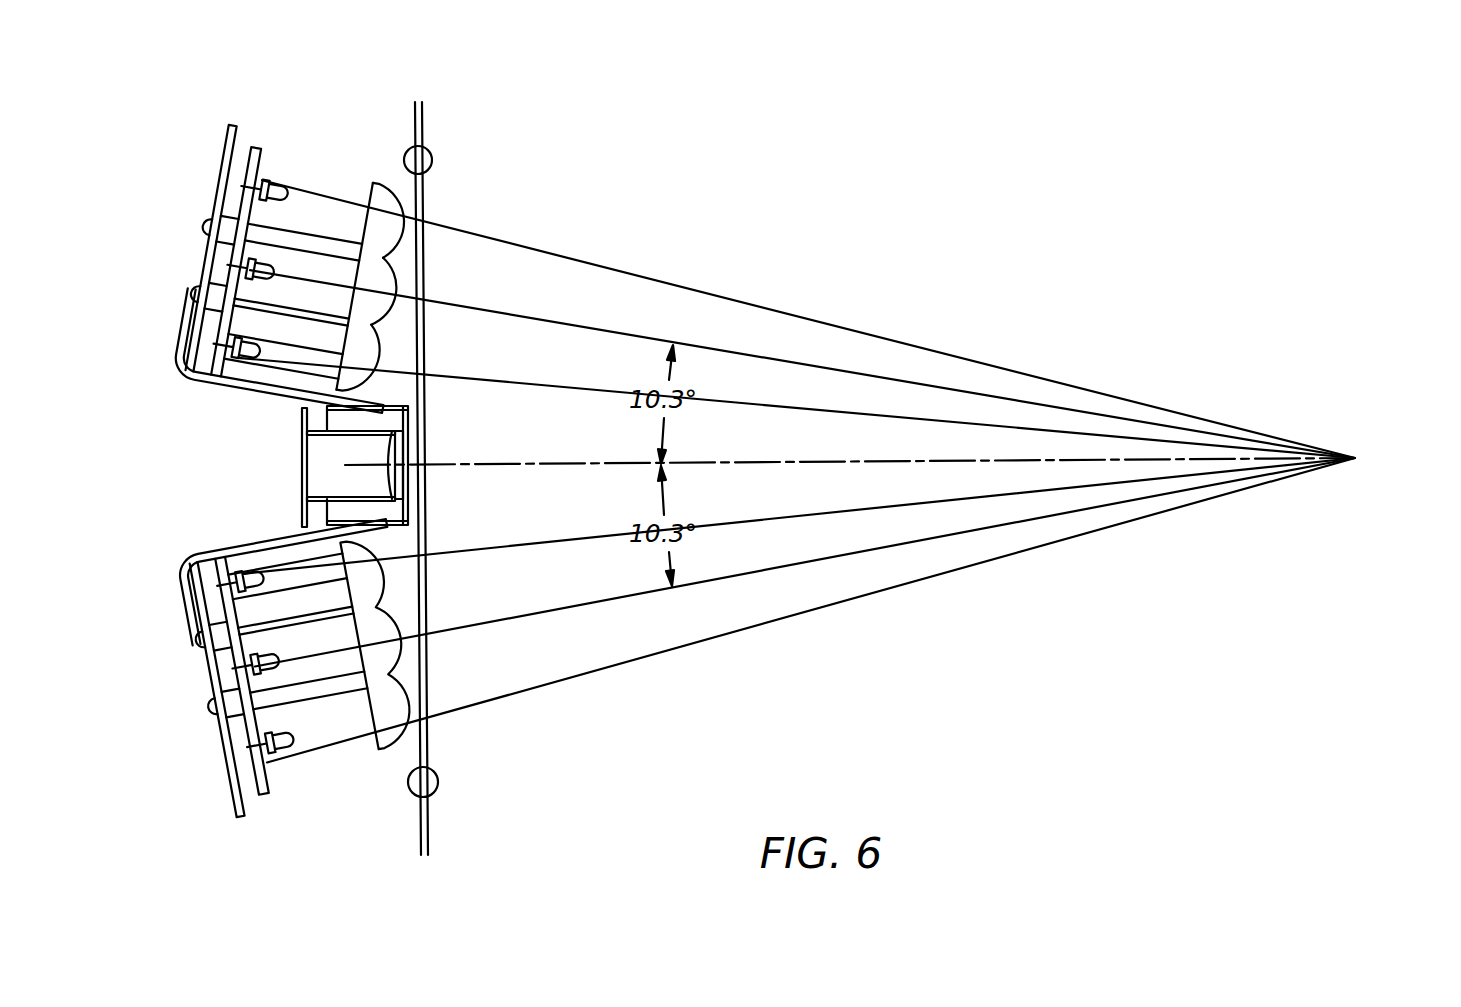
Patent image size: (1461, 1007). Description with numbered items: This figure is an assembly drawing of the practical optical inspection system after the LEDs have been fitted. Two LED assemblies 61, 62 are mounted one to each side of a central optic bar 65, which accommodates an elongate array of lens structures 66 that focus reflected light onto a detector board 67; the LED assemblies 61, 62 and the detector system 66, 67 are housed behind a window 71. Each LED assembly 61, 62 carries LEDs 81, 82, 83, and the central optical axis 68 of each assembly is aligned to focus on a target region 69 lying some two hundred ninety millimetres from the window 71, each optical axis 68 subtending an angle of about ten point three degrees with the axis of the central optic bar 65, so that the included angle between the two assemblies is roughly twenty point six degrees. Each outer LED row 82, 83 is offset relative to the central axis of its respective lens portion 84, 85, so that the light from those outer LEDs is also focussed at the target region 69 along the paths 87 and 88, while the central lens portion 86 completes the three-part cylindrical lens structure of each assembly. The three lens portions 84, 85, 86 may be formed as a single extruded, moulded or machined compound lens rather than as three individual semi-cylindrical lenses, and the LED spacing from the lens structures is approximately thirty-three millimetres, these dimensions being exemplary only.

The LED assembly 61 is at (264, 147).
The LED assembly 62 is at (270, 797).
The central optic bar 65 is at (414, 508).
The lens structure 66 is at (392, 453).
The detector board 67 is at (301, 507).
The central optical axis 68 is at (537, 620).
The target region 69 is at (1372, 460).
The window 71 is at (432, 190).
The LED 81 is at (215, 259).
The outer LED row 82 is at (279, 187).
The outer LED row 83 is at (249, 358).
The cylindrical lens portion 84 is at (425, 226).
The cylindrical lens portion 85 is at (420, 354).
The cylindrical lens portion 86 is at (412, 273).
The light path 87 is at (637, 280).
The light path 88 is at (537, 382).